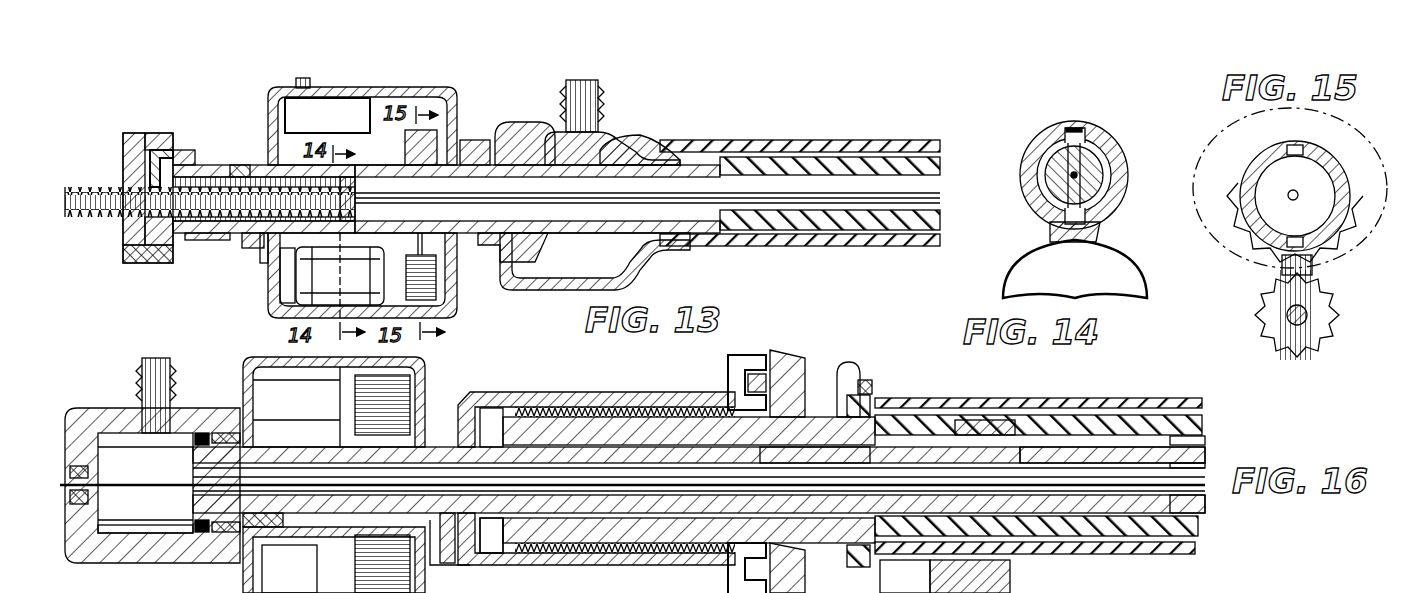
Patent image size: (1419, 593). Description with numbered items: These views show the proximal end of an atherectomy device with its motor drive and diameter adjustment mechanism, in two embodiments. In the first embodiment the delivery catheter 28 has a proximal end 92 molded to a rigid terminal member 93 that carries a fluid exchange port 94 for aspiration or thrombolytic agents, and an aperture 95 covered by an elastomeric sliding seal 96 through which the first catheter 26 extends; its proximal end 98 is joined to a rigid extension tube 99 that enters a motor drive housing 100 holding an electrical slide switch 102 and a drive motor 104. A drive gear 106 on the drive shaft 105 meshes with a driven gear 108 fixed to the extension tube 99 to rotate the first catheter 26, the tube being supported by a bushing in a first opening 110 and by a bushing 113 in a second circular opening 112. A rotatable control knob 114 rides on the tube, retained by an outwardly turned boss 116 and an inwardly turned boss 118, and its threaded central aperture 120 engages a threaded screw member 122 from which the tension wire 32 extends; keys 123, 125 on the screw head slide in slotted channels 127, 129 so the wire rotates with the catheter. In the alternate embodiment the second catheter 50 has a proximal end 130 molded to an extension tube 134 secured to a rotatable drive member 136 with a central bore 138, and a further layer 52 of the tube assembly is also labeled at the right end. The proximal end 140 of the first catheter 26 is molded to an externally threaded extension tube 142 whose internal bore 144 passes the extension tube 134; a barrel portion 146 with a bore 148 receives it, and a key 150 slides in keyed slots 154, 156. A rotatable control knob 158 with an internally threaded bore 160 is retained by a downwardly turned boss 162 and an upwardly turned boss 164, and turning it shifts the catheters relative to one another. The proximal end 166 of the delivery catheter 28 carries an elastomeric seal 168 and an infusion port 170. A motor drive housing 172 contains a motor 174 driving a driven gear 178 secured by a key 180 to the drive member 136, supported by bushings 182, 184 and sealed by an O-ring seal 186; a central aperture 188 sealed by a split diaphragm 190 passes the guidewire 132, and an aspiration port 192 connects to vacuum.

In FIG. 13, the first catheter 26 is at (832, 163).
In FIG. 16, the first catheter 26 is at (1130, 415).
In FIG. 13, the delivery catheter 28 is at (748, 152).
In FIG. 16, the delivery catheter 28 is at (1188, 400).
In FIG. 13, the tension wire 32 is at (718, 207).
In FIG. 14, the tension wire 32 is at (1080, 177).
In FIG. 15, the tension wire 32 is at (1305, 176).
In FIG. 16, the second catheter 50 is at (1203, 440).
In FIG. 16, the tube layer 52 is at (1200, 463).
In FIG. 13, the proximal end of delivery catheter 92 is at (688, 140).
In FIG. 13, the terminal member 93 is at (652, 145).
In FIG. 13, the fluid exchange port 94 is at (598, 96).
In FIG. 13, the aperture 95 is at (550, 158).
In FIG. 13, the elastomeric sliding seal 96 is at (500, 140).
In FIG. 13, the proximal end of first catheter 98 is at (758, 232).
In FIG. 13, the extension tube 99 is at (478, 160).
In FIG. 14, the extension tube 99 is at (1040, 148).
In FIG. 15, the extension tube 99 is at (1340, 172).
In FIG. 13, the motor drive housing 100 is at (447, 98).
In FIG. 13, the electrical slide switch 102 is at (268, 98).
In FIG. 13, the drive motor 104 is at (285, 282).
In FIG. 14, the drive motor 104 is at (1136, 253).
In FIG. 13, the drive shaft 105 is at (340, 248).
In FIG. 15, the drive shaft 105 is at (1322, 304).
In FIG. 13, the drive gear 106 is at (440, 290).
In FIG. 15, the drive gear 106 is at (1325, 322).
In FIG. 13, the driven gear 108 is at (490, 245).
In FIG. 15, the driven gear 108 is at (1252, 250).
In FIG. 13, the first opening 110 is at (530, 282).
In FIG. 13, the second circular opening 112 is at (258, 250).
In FIG. 13, the bushing 113 is at (242, 240).
In FIG. 13, the rotatable control knob 114 is at (123, 146).
In FIG. 13, the outwardly turned boss 116 is at (154, 150).
In FIG. 13, the inwardly turned boss 118 is at (176, 150).
In FIG. 13, the threaded central aperture 120 is at (124, 182).
In FIG. 13, the threaded screw member 122 is at (95, 217).
In FIG. 14, the threaded screw member 122 is at (1105, 160).
In FIG. 14, the key 123 is at (1085, 133).
In FIG. 14, the key 125 is at (1100, 212).
In FIG. 13, the slotted channel 127 is at (238, 165).
In FIG. 14, the slotted channel 127 is at (1075, 128).
In FIG. 13, the slotted channel 129 is at (203, 240).
In FIG. 14, the slotted channel 129 is at (1052, 226).
In FIG. 16, the proximal end of second catheter 130 is at (1030, 447).
In FIG. 16, the guidewire 132 is at (1198, 500).
In FIG. 16, the extension tube 134 is at (828, 447).
In FIG. 16, the rotatable drive member 136 is at (334, 402).
In FIG. 16, the central bore 138 is at (178, 530).
In FIG. 16, the proximal end of first catheter 140 is at (968, 420).
In FIG. 16, the extension tube 142 is at (748, 390).
In FIG. 16, the internal bore 144 is at (655, 440).
In FIG. 16, the barrel portion 146 is at (689, 555).
In FIG. 16, the bore 148 is at (490, 565).
In FIG. 16, the key 150 is at (512, 395).
In FIG. 16, the keyed slot 154 is at (590, 407).
In FIG. 16, the keyed slot 156 is at (660, 557).
In FIG. 16, the rotatable control knob 158 is at (852, 376).
In FIG. 16, the internally threaded bore 160 is at (784, 568).
In FIG. 16, the downwardly turned boss 162 is at (735, 370).
In FIG. 16, the upwardly turned boss 164 is at (792, 356).
In FIG. 16, the proximal end of delivery catheter 166 is at (868, 395).
In FIG. 16, the elastomeric seal 168 is at (872, 388).
In FIG. 16, the infusion port 170 is at (928, 569).
In FIG. 16, the motor drive housing 172 is at (251, 569).
In FIG. 16, the motor 174 is at (334, 560).
In FIG. 16, the driven gear 178 is at (355, 385).
In FIG. 16, the key 180 is at (352, 447).
In FIG. 16, the bushing 182 is at (265, 520).
In FIG. 16, the bushing 184 is at (448, 565).
In FIG. 16, the elastomeric O-ring seal 186 is at (202, 433).
In FIG. 16, the central aperture 188 is at (105, 492).
In FIG. 16, the elastomeric split diaphragm 190 is at (80, 445).
In FIG. 16, the aspiration port 192 is at (158, 365).